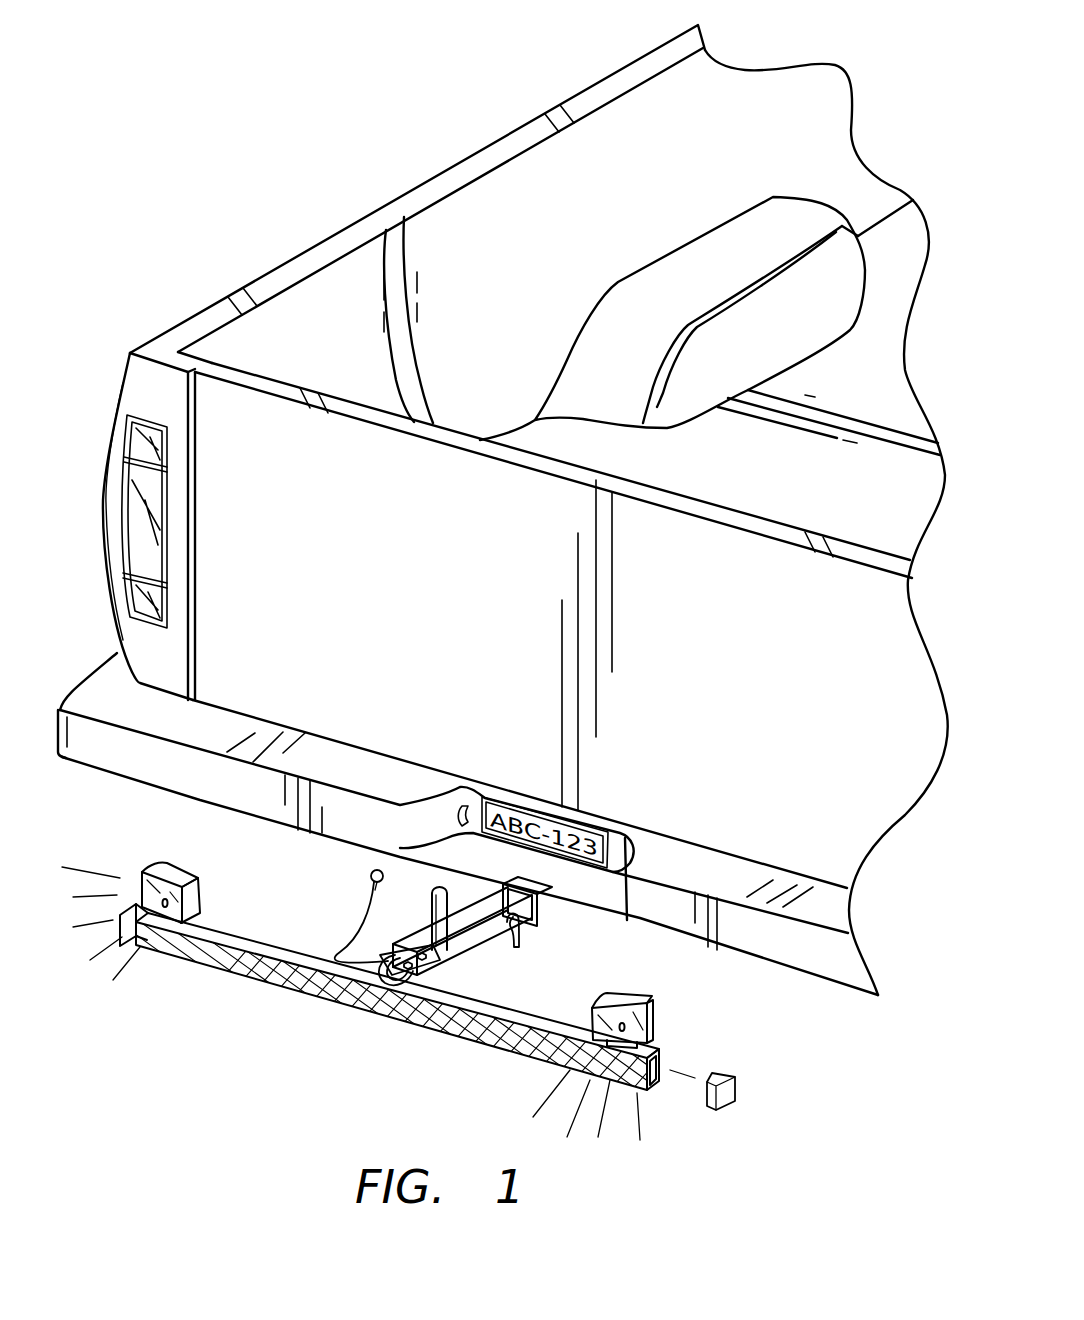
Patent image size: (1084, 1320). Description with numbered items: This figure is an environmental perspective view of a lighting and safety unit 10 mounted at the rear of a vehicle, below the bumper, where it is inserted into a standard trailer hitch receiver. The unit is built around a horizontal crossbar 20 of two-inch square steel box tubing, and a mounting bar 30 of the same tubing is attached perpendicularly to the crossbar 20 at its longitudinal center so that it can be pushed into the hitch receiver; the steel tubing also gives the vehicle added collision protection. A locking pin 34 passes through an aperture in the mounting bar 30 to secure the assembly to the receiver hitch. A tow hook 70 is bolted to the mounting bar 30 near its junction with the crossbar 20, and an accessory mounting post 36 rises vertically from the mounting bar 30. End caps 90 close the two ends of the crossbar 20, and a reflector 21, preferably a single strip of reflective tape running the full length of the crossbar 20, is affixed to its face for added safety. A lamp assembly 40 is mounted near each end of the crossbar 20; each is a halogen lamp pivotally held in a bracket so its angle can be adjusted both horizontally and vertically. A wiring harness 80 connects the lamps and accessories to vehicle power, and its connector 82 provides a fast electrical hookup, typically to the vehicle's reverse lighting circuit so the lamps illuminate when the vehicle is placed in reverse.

The lighting and safety unit 10 is at (168, 1013).
The crossbar 20 is at (232, 937).
The reflector 21 is at (450, 1037).
The mounting bar 30 is at (467, 963).
The locking pin 34 is at (521, 935).
The accessory mounting post 36 is at (432, 897).
The lamp assembly 40 is at (158, 872).
The tow hook 70 is at (390, 966).
The wiring harness 80 is at (350, 947).
The connector 82 is at (371, 878).
The end caps 90 is at (727, 1097).